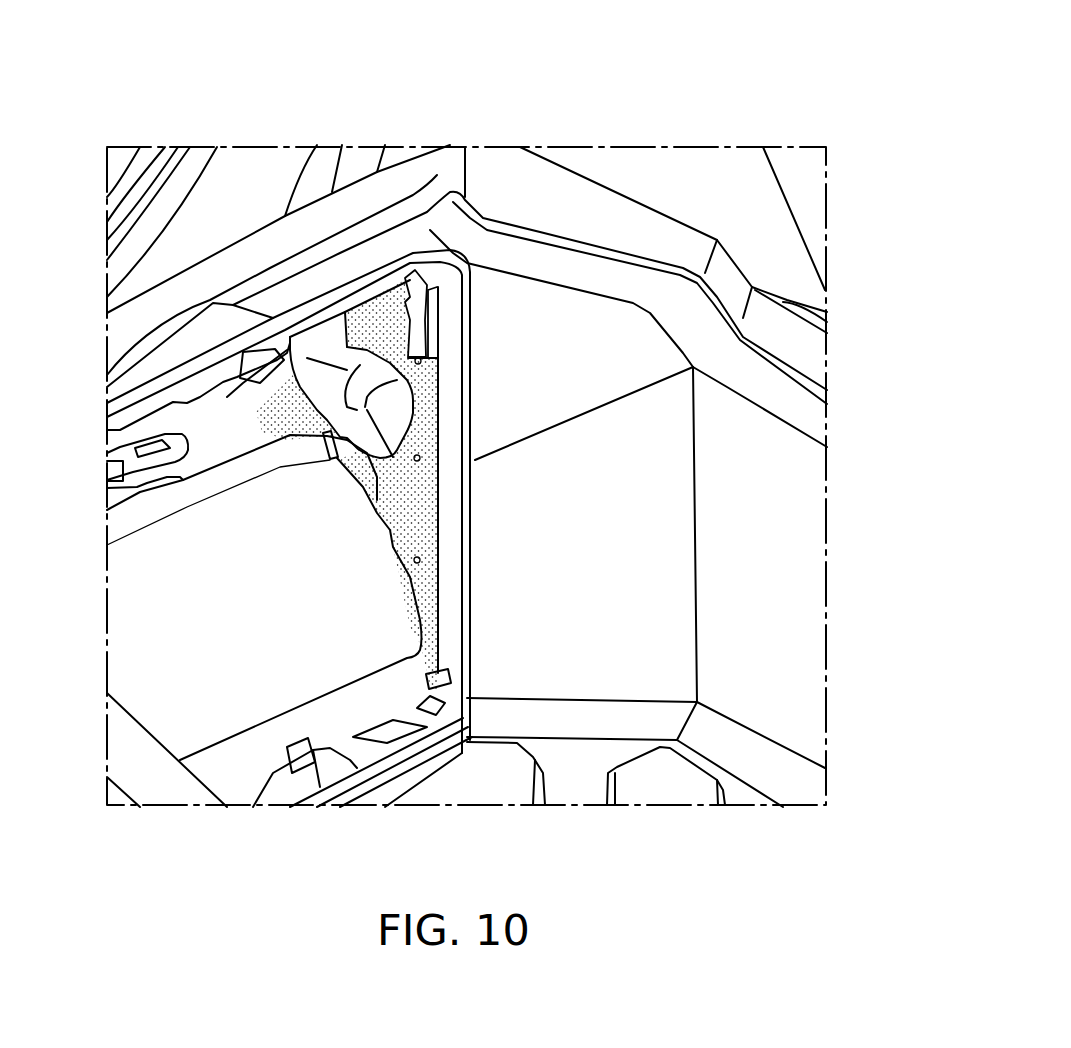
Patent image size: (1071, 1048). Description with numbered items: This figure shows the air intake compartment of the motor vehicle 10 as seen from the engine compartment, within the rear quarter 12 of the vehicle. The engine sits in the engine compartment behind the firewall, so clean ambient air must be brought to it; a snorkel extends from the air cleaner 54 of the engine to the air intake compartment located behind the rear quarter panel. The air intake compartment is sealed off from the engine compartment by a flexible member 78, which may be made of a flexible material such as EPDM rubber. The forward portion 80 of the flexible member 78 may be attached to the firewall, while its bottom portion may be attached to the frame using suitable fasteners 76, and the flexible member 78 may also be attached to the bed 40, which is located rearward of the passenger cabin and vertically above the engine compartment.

The motor vehicle 10 is at (688, 88).
The rear quarter 12 is at (858, 590).
The bed 40 is at (540, 615).
The air cleaner 54 is at (173, 638).
The fasteners 76 is at (421, 360).
The flexible member 78 is at (413, 498).
The forward portion 80 is at (295, 412).